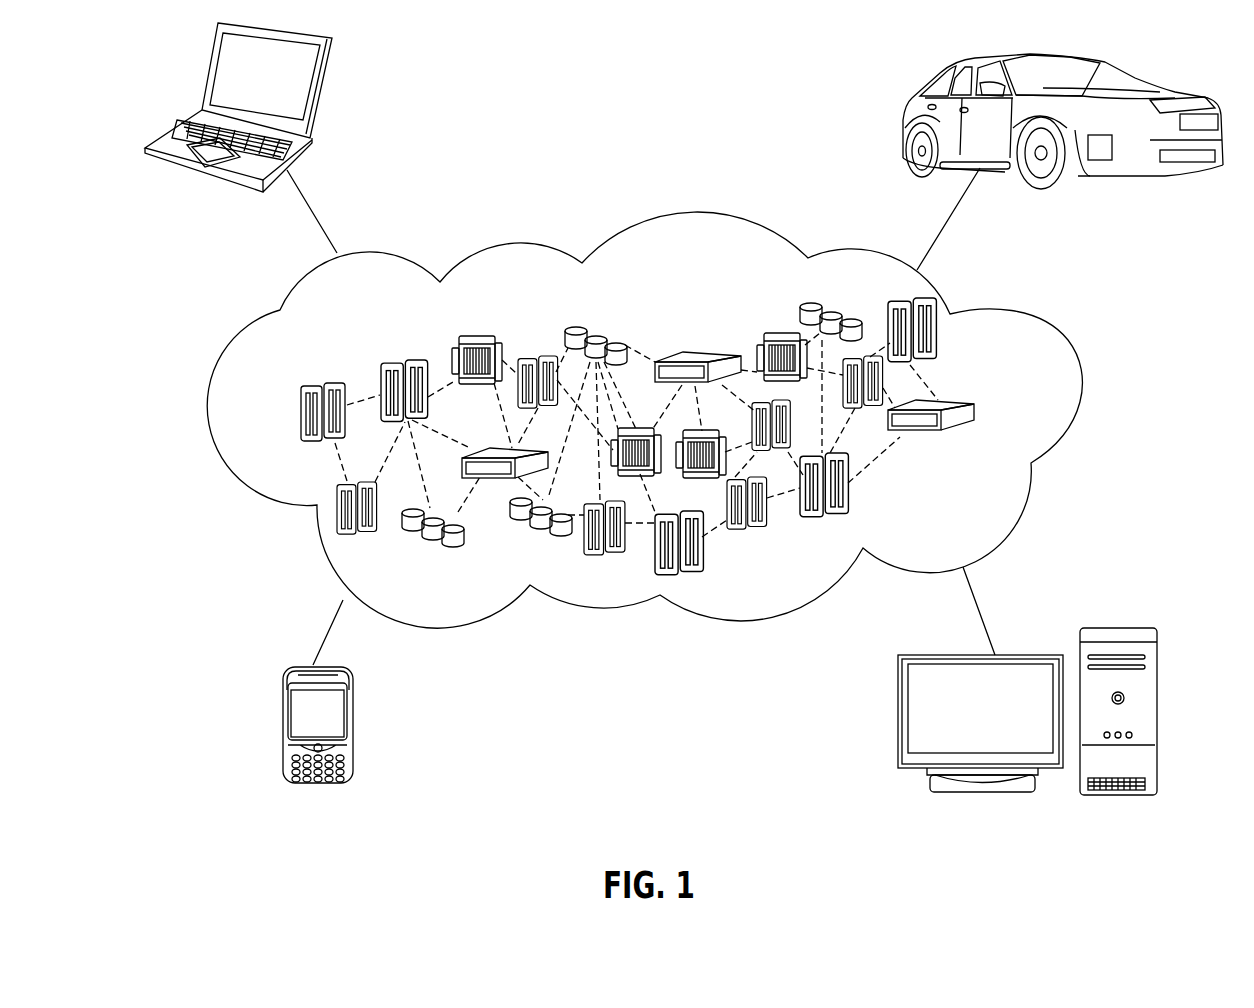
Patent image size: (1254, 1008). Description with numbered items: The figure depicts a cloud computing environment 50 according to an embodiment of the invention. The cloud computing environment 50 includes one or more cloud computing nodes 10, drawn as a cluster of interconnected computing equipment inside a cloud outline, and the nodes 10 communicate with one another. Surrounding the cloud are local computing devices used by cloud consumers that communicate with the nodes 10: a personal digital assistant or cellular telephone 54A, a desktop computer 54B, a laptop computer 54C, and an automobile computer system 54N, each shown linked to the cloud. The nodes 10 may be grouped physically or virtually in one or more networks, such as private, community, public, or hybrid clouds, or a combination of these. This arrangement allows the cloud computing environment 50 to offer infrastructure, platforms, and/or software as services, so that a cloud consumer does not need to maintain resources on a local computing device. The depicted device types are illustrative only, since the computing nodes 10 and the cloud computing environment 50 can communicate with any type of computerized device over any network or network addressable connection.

The cloud computing nodes 10 is at (1012, 415).
The cloud computing environment 50 is at (1038, 327).
The personal digital assistant (PDA) or cellular telephone 54A is at (280, 730).
The desktop computer 54B is at (1122, 630).
The laptop computer 54C is at (325, 92).
The automobile computer system 54N is at (912, 102).